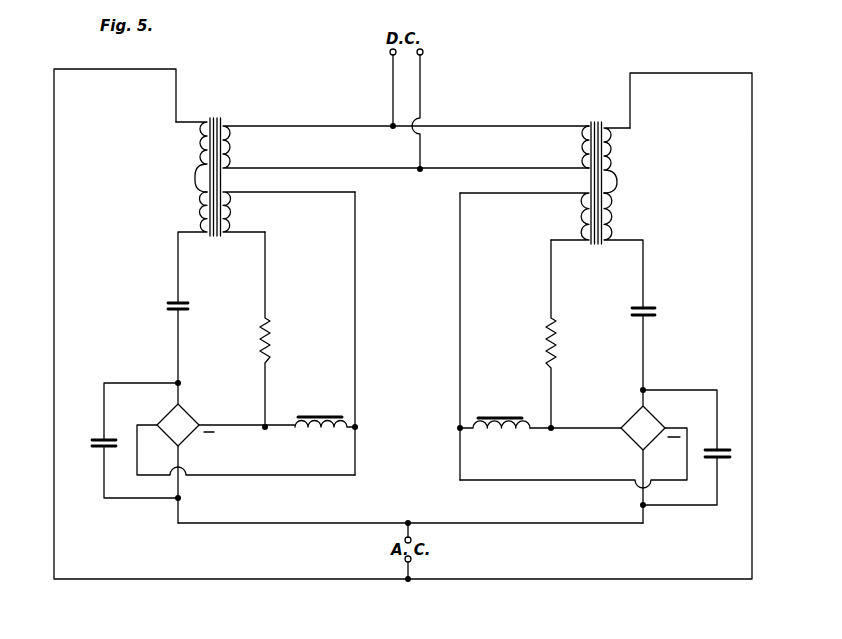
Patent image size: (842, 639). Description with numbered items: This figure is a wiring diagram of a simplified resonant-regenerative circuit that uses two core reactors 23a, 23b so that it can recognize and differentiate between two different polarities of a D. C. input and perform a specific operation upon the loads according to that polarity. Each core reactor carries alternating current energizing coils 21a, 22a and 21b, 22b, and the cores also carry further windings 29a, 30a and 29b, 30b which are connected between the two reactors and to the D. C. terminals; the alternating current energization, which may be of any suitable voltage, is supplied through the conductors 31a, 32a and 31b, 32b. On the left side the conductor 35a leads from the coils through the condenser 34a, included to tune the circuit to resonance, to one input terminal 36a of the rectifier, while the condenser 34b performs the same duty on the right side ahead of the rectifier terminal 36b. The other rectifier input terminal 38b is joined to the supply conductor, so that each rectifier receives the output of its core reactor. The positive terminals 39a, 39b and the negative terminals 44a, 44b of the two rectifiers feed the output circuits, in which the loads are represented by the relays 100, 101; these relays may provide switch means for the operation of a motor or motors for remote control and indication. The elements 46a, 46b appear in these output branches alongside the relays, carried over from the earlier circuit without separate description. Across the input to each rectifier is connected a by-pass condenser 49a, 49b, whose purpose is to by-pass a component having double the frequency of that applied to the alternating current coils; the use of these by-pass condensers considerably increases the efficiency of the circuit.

The alternating current energizing coil 21a is at (192, 160).
The alternating current energizing coil 21b is at (622, 166).
The alternating current energizing coil 22a is at (192, 217).
The alternating current energizing coil 22b is at (620, 217).
The core reactor 23a is at (213, 118).
The core reactor 23b is at (600, 114).
The secondary winding 29a is at (238, 222).
The secondary winding 29b is at (574, 230).
The secondary winding 30a is at (240, 163).
The secondary winding 30b is at (574, 157).
The conductor 31a is at (54, 300).
The conductor 31b is at (752, 337).
The conductor 32a is at (338, 521).
The conductor 32b is at (576, 521).
The condenser 34a is at (188, 308).
The condenser 34b is at (648, 313).
The conductor 35a is at (178, 283).
The rectifier terminal 36a is at (184, 410).
The rectifier terminal 36b is at (646, 392).
The rectifier terminal 38b is at (181, 450).
The positive terminal 39a is at (200, 430).
The positive terminal 39b is at (628, 421).
The negative terminal 44a is at (162, 420).
The negative terminal 44b is at (667, 420).
The resistor 46a is at (268, 352).
The resistor 46b is at (554, 358).
The by-pass condenser 49a is at (104, 450).
The by-pass condenser 49b is at (730, 450).
The relay 100 is at (312, 409).
The relay 101 is at (500, 410).